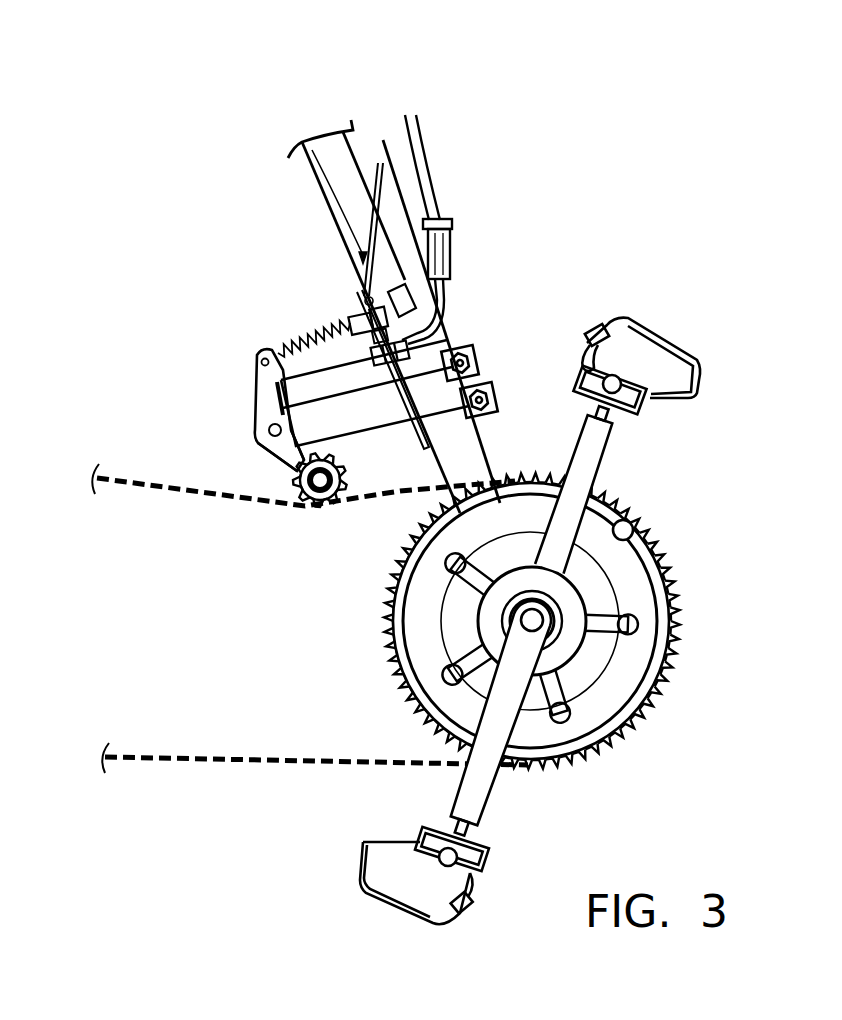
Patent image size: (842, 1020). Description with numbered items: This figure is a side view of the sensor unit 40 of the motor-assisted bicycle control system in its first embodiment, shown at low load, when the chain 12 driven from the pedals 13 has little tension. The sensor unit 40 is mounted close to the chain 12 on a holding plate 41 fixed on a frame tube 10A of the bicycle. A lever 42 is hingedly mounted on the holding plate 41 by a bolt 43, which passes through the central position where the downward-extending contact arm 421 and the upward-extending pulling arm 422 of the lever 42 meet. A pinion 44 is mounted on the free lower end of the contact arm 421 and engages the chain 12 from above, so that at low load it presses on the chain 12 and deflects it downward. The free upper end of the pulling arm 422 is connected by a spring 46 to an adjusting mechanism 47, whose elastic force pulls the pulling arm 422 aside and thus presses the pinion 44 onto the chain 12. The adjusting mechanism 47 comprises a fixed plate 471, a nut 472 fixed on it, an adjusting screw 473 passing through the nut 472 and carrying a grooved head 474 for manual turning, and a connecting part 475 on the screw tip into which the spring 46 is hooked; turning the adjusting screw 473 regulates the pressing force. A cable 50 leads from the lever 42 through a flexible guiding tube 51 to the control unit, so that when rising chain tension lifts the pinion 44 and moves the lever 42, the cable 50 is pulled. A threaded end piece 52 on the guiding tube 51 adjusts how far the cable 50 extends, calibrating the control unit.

The frame tube 10A is at (357, 133).
The chain 12 is at (157, 492).
The pedals 13 is at (607, 440).
The sensor unit 40 is at (188, 382).
The holding plate 41 is at (388, 420).
The lever 42 is at (202, 387).
The contact arm 421 is at (282, 455).
The pulling arm 422 is at (257, 358).
The bolt 43 is at (263, 430).
The pinion 44 is at (302, 504).
The spring 46 is at (322, 330).
The adjusting mechanism 47 is at (300, 146).
The fixed plate 471 is at (365, 298).
The nut 472 is at (420, 330).
The adjusting screw 473 is at (392, 291).
The grooved head 474 is at (440, 298).
The connecting part 475 is at (345, 315).
The cable 50 is at (303, 356).
The flexible guiding tube 51 is at (432, 168).
The threaded end piece 52 is at (450, 240).